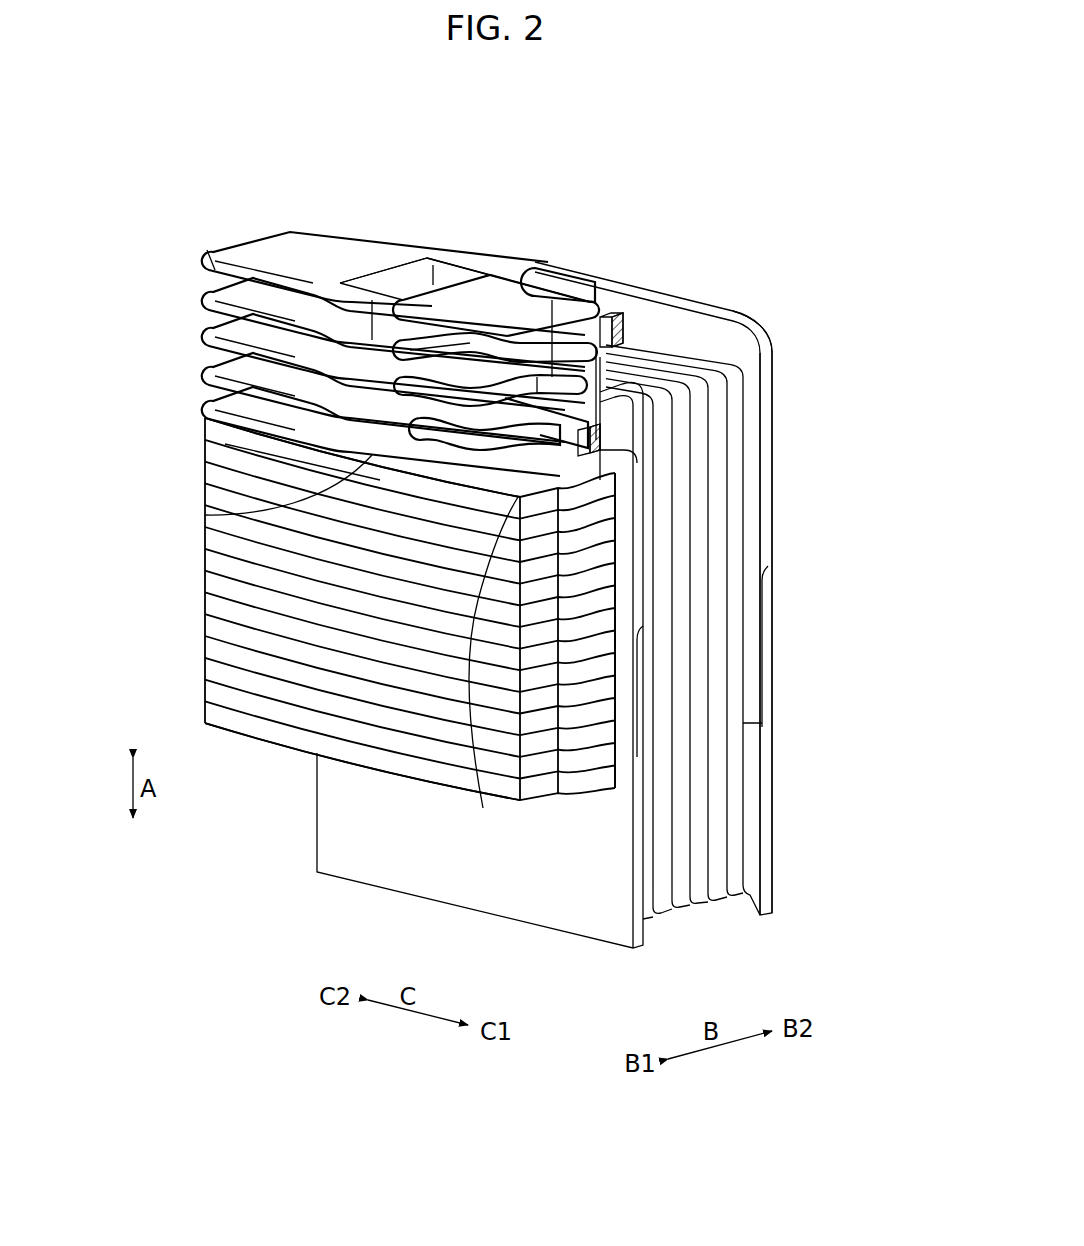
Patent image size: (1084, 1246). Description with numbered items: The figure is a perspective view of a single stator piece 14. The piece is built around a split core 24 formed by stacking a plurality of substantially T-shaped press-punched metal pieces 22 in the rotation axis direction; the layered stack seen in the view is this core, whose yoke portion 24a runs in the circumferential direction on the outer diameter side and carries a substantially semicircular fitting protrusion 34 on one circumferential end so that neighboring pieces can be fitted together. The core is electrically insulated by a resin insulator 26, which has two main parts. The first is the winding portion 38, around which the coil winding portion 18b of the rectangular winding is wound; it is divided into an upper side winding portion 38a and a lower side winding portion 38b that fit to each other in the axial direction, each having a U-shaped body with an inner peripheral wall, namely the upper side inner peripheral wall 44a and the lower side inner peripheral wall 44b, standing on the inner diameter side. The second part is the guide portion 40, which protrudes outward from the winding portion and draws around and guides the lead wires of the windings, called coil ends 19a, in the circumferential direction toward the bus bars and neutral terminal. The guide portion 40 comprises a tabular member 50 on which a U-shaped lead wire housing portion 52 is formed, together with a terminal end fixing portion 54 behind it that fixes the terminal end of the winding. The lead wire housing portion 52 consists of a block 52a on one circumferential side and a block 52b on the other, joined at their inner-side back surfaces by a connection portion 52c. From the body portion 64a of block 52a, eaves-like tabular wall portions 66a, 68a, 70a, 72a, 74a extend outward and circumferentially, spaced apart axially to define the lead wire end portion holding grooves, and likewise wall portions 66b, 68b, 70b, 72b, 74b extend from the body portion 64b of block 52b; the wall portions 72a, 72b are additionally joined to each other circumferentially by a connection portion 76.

The stator piece 14 is at (604, 127).
The coil winding portion 18b is at (693, 631).
The coil end 19a is at (610, 324).
The metal piece 22 is at (207, 711).
The split core 24 is at (205, 560).
The yoke portion 24a is at (205, 474).
The insulator 26 is at (662, 216).
The fitting protrusion 34 is at (597, 792).
The winding portion 38 is at (645, 290).
The upper side winding portion 38a is at (772, 385).
The lower side winding portion 38b is at (773, 786).
The guide portion 40 is at (222, 218).
The upper side inner peripheral wall 44a is at (773, 540).
The lower side inner peripheral wall 44b is at (773, 826).
The tabular member 50 is at (205, 515).
The lead wire housing portion 52 is at (378, 197).
The block 52a is at (392, 246).
The block 52b is at (515, 278).
The connection portion 52c is at (452, 272).
The terminal end fixing portion 54 is at (770, 302).
The body portion 64a is at (380, 337).
The body portion 64b is at (552, 300).
The wall portion 66a is at (270, 240).
The wall portion 66b is at (571, 300).
The wall portion 68a is at (207, 298).
The wall portion 68b is at (600, 348).
The wall portion 70a is at (207, 336).
The wall portion 70b is at (600, 440).
The wall portion 72a is at (207, 374).
The wall portion 72b is at (598, 455).
The wall portion 74a is at (205, 409).
The wall portion 74b is at (489, 672).
The connection portion 76 is at (225, 444).